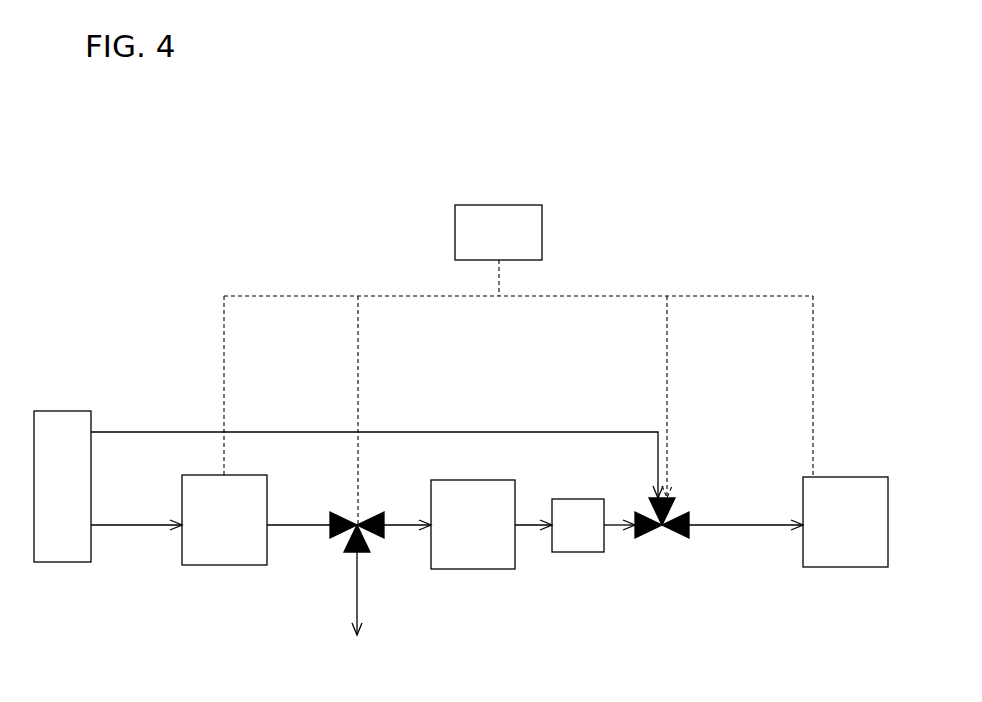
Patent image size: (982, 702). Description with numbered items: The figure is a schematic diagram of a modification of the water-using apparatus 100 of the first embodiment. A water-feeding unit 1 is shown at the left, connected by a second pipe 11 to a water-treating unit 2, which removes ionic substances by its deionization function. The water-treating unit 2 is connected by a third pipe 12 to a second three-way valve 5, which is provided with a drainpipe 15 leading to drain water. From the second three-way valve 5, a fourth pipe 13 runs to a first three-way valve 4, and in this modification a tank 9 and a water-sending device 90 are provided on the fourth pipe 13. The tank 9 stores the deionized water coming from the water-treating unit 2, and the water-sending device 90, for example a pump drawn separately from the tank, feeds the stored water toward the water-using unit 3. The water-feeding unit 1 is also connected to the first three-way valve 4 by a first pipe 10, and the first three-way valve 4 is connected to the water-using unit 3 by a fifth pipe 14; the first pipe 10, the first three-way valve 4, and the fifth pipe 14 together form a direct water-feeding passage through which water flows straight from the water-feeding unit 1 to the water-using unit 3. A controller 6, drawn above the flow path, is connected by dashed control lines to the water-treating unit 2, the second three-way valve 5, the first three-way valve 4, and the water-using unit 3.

The water-using apparatus 100 is at (730, 235).
The water-feeding unit 1 is at (62, 486).
The water-treating unit 2 is at (224, 520).
The water-using unit 3 is at (845, 522).
The first three-way valve 4 is at (680, 502).
The second three-way valve 5 is at (343, 503).
The controller 6 is at (498, 232).
The tank 9 is at (473, 524).
The water-sending device 90 is at (578, 525).
The first pipe 10 is at (138, 432).
The second pipe 11 is at (128, 525).
The third pipe 12 is at (303, 525).
The fourth pipe 13 is at (397, 521).
The fifth pipe 14 is at (745, 528).
The drainpipe 15 is at (357, 585).